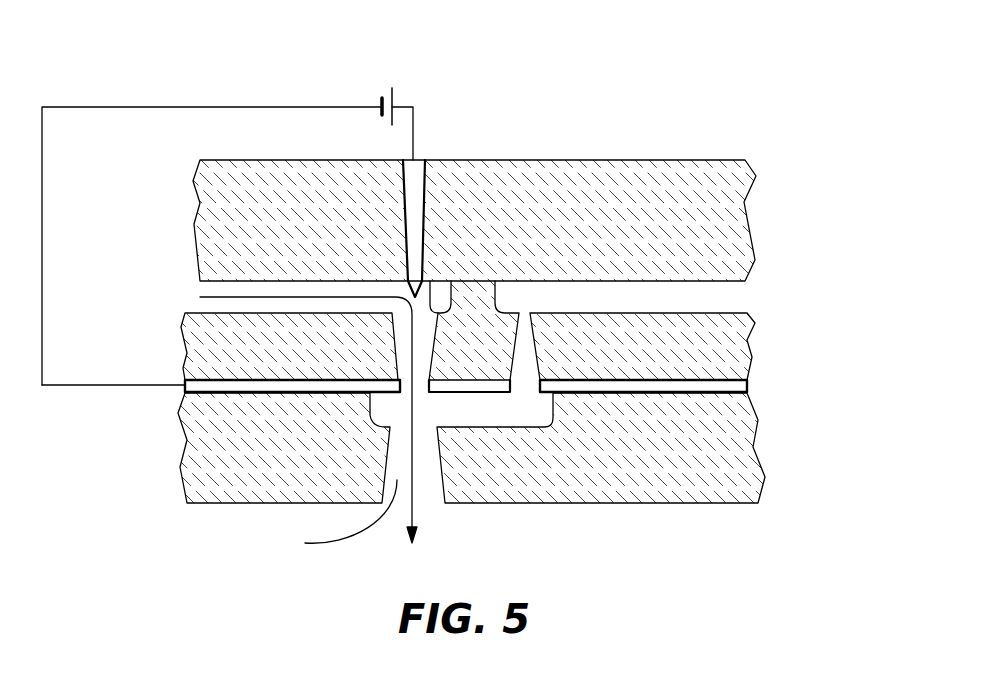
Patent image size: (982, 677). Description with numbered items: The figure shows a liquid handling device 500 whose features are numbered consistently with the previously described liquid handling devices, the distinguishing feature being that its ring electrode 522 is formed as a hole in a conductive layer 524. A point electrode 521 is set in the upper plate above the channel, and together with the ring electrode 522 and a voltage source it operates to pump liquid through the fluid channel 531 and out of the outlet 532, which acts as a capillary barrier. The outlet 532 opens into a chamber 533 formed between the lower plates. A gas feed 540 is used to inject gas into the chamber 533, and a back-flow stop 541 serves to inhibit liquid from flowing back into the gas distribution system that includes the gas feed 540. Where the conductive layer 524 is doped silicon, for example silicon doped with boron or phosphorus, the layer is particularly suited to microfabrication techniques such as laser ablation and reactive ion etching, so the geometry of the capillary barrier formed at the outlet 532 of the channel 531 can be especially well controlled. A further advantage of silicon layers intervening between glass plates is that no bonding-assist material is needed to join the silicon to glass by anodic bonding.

The liquid handling device 500 is at (455, 138).
The point electrode 521 is at (412, 193).
The gas feed 540 is at (603, 290).
The fluid channel 531 is at (287, 290).
The ring electrode 522 is at (393, 380).
The conductive layer 524 is at (180, 392).
The chamber 533 is at (392, 410).
The outlet 532 is at (422, 398).
The back-flow stop 541 is at (527, 332).